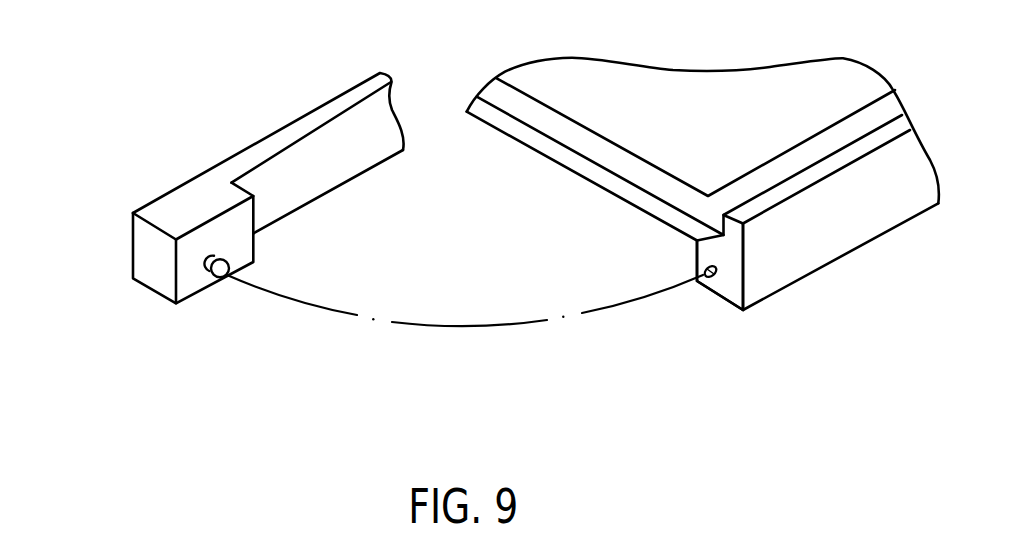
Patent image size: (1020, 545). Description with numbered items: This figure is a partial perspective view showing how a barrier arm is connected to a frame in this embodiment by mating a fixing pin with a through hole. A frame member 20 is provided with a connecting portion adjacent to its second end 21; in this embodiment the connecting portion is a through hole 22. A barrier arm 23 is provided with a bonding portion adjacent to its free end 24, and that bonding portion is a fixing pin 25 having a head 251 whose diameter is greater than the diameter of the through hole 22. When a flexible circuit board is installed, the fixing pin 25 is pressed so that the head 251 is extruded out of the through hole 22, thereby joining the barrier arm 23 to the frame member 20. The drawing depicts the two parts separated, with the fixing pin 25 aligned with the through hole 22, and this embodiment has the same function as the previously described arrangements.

The frame member 20 is at (843, 238).
The second end 21 is at (732, 290).
The through hole 22 is at (707, 282).
The barrier arm 23 is at (315, 103).
The free end 24 is at (176, 256).
The fixing pin 25 is at (203, 273).
The head 251 is at (218, 275).